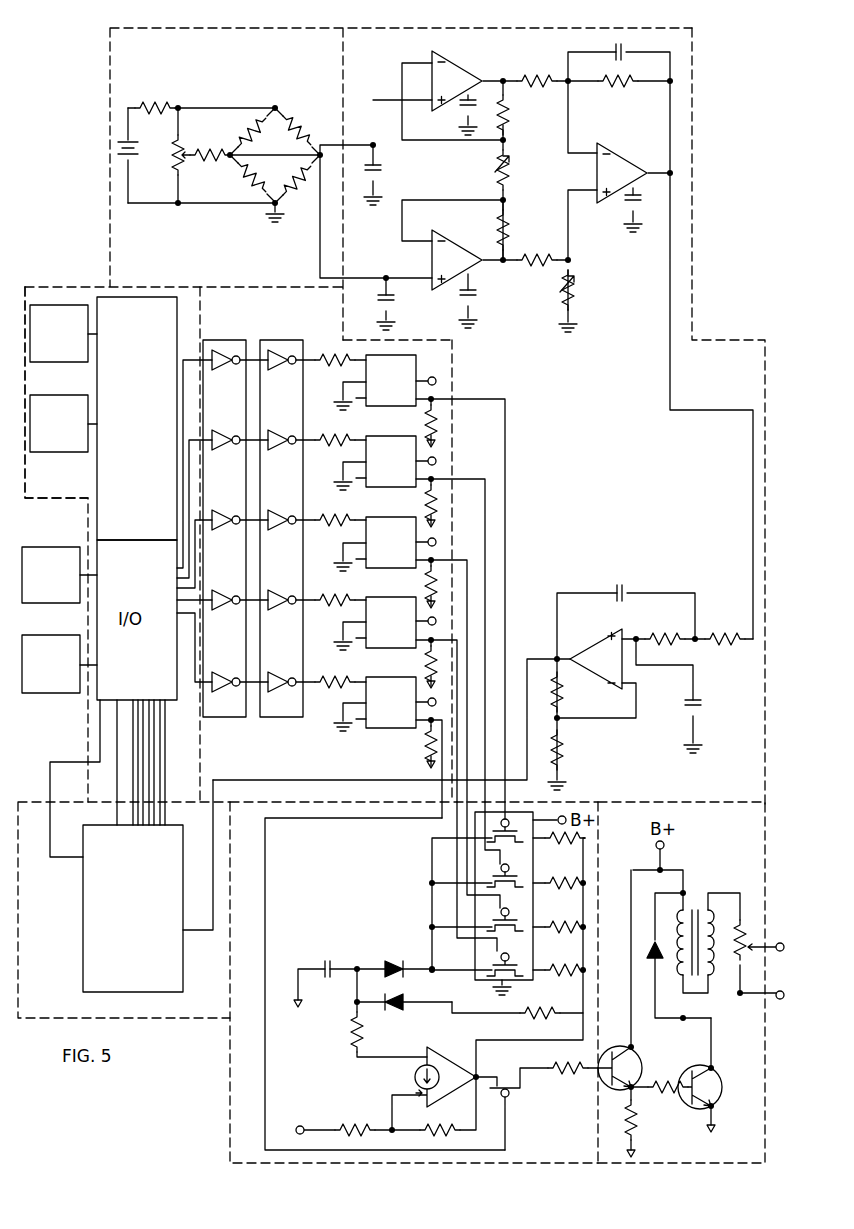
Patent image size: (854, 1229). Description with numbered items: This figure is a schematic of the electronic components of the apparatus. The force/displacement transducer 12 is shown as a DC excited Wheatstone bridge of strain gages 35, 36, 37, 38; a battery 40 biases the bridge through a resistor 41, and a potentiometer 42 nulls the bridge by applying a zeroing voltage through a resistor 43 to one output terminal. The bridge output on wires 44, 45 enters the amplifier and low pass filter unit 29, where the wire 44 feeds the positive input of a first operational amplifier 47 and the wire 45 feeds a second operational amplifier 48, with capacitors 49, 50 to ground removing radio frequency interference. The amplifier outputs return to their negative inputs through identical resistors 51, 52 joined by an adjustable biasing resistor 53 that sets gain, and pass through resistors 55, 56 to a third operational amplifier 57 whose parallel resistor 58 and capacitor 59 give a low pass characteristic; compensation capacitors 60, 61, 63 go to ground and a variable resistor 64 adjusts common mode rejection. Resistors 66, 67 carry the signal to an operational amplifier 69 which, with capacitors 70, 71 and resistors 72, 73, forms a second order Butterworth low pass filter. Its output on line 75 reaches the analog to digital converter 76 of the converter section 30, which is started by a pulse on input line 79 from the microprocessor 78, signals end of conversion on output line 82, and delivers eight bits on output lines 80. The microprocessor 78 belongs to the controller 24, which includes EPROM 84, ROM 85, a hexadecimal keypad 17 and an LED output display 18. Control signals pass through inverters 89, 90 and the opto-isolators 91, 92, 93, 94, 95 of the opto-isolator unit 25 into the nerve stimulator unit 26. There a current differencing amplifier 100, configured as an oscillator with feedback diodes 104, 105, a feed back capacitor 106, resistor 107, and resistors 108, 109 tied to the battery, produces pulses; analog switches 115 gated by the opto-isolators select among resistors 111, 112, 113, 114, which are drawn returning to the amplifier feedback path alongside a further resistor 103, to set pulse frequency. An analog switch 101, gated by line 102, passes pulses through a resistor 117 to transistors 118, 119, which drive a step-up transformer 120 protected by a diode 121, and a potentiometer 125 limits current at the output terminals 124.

The force/displacement transducer 12 is at (108, 55).
The hexadecimal keypad 17 is at (64, 548).
The LED output display 18 is at (64, 700).
The controller 24 is at (92, 282).
The opto-isolator unit 25 is at (456, 382).
The peripheral nerve stimulator unit 26 is at (762, 852).
The amplifier and low pass filter unit 29 is at (694, 76).
The analog-to-digital converter 30 is at (48, 800).
The strain gage 35 is at (298, 127).
The strain gage 36 is at (242, 180).
The strain gage 37 is at (248, 140).
The strain gage 38 is at (297, 186).
The battery 40 is at (119, 160).
The resistor 41 is at (152, 106).
The potentiometer 42 is at (174, 166).
The resistor 43 is at (211, 151).
The wire 44 is at (332, 143).
The wire 45 is at (319, 266).
The first operational amplifier 47 is at (454, 69).
The second operational amplifier 48 is at (454, 249).
The capacitor 49 is at (380, 170).
The capacitor 50 is at (392, 304).
The resistor 51 is at (506, 242).
The resistor 52 is at (508, 118).
The adjustable biasing resistor 53 is at (496, 160).
The resistor 55 is at (542, 78).
The resistor 56 is at (536, 266).
The third operational amplifier 57 is at (628, 167).
The resistor 58 is at (632, 88).
The capacitor 59 is at (616, 43).
The compensation capacitor 60 is at (460, 110).
The compensation capacitor 61 is at (476, 298).
The compensation capacitor 63 is at (628, 208).
The variable resistor 64 is at (574, 294).
The resistor 66 is at (724, 630).
The resistor 67 is at (666, 630).
The operational amplifier 69 is at (602, 642).
The capacitor 70 is at (626, 588).
The capacitor 71 is at (698, 696).
The resistor 72 is at (562, 686).
The resistor 73 is at (562, 750).
The line 75 is at (336, 782).
The analog to digital converter 76 is at (84, 908).
The microprocessor 78 is at (182, 322).
The input line 79 is at (116, 798).
The output lines 80 is at (165, 740).
The output line 82 is at (78, 762).
The EPROM 84 is at (65, 299).
The ROM 85 is at (72, 454).
The inverter 89 is at (232, 717).
The inverter 90 is at (286, 717).
The opto-isolator 91 is at (394, 409).
The opto-isolator 92 is at (394, 489).
The opto-isolator 93 is at (394, 570).
The opto-isolator 94 is at (394, 650).
The opto-isolator 95 is at (394, 730).
The current differencing amplifier 100 is at (462, 1052).
The analog switch 101 is at (510, 1094).
The line 102 is at (272, 846).
The resistor 103 is at (530, 1016).
The diode 104 is at (408, 999).
The diode 105 is at (390, 960).
The feed back capacitor 106 is at (330, 964).
The resistor 107 is at (366, 1032).
The resistor 108 is at (452, 1128).
The resistor 109 is at (356, 1126).
The resistor 111 is at (562, 974).
The resistor 112 is at (562, 931).
The resistor 113 is at (562, 887).
The resistor 114 is at (562, 842).
The analog switches 115 is at (496, 986).
The resistor 117 is at (564, 1070).
The transistor 118 is at (638, 1042).
The power transistor 119 is at (712, 1082).
The step-up transformer 120 is at (713, 903).
The diode 121 is at (650, 948).
The output terminals 124 is at (778, 954).
The potentiometer 125 is at (743, 920).